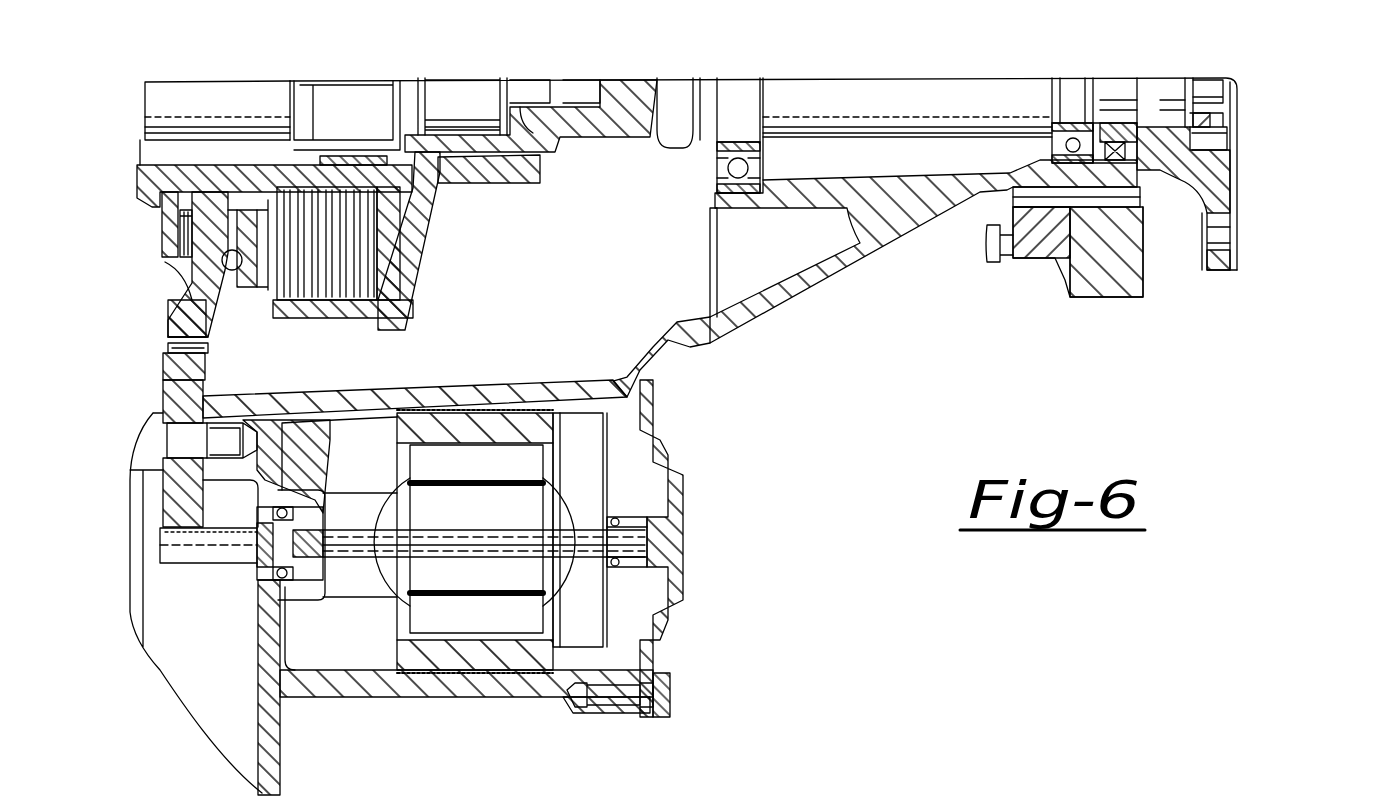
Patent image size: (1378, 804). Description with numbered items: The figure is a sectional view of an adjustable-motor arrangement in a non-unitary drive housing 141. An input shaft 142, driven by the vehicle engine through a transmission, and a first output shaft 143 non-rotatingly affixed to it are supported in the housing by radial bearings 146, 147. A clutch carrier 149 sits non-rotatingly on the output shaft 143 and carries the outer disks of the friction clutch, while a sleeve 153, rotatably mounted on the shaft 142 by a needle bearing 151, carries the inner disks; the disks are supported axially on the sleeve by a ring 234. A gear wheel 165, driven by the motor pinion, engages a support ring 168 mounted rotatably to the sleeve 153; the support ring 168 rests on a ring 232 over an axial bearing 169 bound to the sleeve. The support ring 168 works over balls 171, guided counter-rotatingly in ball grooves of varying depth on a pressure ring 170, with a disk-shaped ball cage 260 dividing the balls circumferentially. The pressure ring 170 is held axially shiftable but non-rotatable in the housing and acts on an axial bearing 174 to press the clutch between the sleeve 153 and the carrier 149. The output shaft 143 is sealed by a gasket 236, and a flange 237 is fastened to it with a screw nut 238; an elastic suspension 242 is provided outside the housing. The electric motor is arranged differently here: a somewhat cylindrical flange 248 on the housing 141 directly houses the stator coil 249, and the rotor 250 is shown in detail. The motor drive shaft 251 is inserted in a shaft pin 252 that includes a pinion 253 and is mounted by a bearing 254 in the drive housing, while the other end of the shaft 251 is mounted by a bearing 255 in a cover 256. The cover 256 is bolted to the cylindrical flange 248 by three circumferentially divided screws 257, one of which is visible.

The drive housing 141 is at (843, 255).
The input shaft 142 is at (165, 107).
The first output shaft 143 is at (957, 113).
The radial bearing 146 is at (755, 196).
The radial bearing 147 is at (1058, 125).
The clutch carrier 149 is at (438, 218).
The needle bearing 151 is at (445, 185).
The sleeve 153 is at (148, 175).
The gear wheel 165 is at (160, 493).
The support ring 168 is at (188, 262).
The axial bearing 169 is at (180, 257).
The pressure ring 170 is at (222, 285).
The balls 171 is at (200, 270).
The axial bearing 174 is at (200, 355).
The ring 232 is at (165, 229).
The ring 234 is at (418, 275).
The gasket 236 is at (1115, 140).
The flange 237 is at (1202, 270).
The screw nut 238 is at (1237, 135).
The elastic suspension 242 is at (1112, 297).
The cylindrical flange 248 is at (468, 692).
The stator coil 249 is at (510, 695).
The rotor 250 is at (547, 692).
The motor drive shaft 251 is at (355, 562).
The shaft pin 252 is at (262, 578).
The pinion 253 is at (177, 547).
The bearing 254 is at (280, 582).
The bearing 255 is at (652, 583).
The cover 256 is at (680, 605).
The screws 257 is at (670, 690).
The ball cage 260 is at (233, 250).